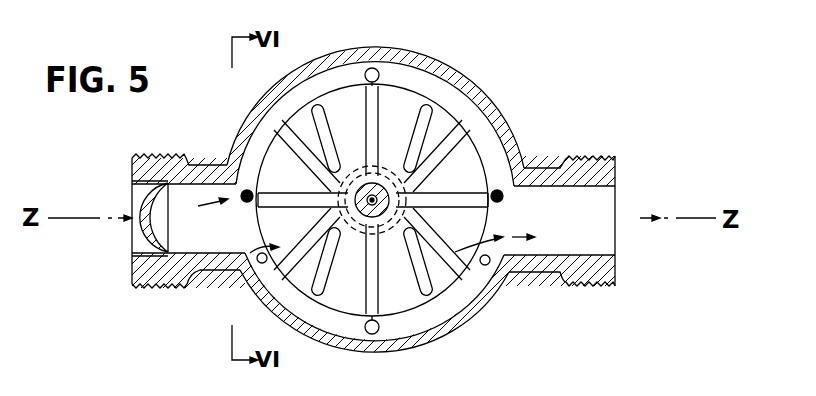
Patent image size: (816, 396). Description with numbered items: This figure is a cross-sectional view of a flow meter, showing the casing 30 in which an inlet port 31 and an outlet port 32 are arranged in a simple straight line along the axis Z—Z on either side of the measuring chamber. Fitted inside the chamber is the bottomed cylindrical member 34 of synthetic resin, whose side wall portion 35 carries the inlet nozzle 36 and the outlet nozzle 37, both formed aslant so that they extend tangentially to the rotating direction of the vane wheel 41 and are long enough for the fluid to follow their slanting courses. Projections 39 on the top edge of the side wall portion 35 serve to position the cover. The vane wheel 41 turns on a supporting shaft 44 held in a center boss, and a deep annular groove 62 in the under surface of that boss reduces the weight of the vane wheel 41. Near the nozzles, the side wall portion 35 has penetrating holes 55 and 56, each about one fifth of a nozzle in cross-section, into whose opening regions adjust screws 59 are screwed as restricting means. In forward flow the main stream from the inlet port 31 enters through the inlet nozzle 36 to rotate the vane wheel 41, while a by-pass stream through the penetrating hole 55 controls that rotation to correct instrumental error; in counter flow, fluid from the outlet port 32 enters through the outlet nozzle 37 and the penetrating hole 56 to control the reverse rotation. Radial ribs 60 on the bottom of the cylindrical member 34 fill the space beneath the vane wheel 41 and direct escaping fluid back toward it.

The casing 30 is at (447, 60).
The inlet port 31 is at (200, 268).
The outlet port 32 is at (605, 250).
The bottomed cylindrical member 34 is at (458, 317).
The side wall portion 35 is at (485, 126).
The inlet nozzle 36 is at (262, 264).
The outlet nozzle 37 is at (488, 266).
The projections 39 is at (372, 336).
The vane wheel 41 is at (338, 113).
The supporting shaft 44 is at (379, 190).
The penetrating hole 55 is at (284, 170).
The penetrating hole 56 is at (512, 172).
The adjust screws 59 is at (242, 188).
The ribs 60 is at (375, 262).
The annular groove 62 is at (407, 193).